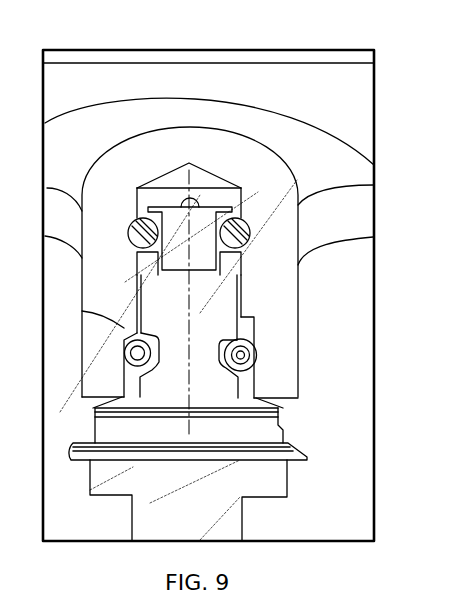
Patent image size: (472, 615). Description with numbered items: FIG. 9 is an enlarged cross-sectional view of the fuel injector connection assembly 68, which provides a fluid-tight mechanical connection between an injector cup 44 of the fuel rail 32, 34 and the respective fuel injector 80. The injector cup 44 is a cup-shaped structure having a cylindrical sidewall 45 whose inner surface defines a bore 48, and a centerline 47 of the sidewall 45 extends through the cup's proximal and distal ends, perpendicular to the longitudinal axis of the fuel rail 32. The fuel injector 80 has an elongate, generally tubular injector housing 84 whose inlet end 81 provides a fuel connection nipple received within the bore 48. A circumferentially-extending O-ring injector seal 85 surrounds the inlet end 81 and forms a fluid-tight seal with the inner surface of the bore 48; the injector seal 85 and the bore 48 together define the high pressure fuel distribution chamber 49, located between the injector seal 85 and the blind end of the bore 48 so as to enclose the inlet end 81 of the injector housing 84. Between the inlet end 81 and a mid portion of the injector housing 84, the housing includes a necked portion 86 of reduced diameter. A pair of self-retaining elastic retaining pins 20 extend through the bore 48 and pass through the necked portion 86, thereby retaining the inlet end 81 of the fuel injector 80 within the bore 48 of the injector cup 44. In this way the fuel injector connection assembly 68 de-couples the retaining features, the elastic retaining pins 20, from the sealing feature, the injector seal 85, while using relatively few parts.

The fuel rail 32 is at (221, 280).
The housing body 34 is at (351, 82).
The injector cup 44 is at (237, 262).
The cylindrical sidewall 45 is at (298, 295).
The high pressure fuel distribution chamber 49 is at (165, 178).
The bore 48 is at (254, 338).
The inlet end 81 is at (198, 246).
The injector seal 85 is at (250, 231).
The centerline 47 is at (190, 312).
The elastic retaining pin 20 is at (124, 357).
The necked portion 86 is at (82, 311).
The fuel injector connection assembly 68 is at (321, 385).
The fuel injector 80 is at (283, 446).
The injector housing 84 is at (292, 477).